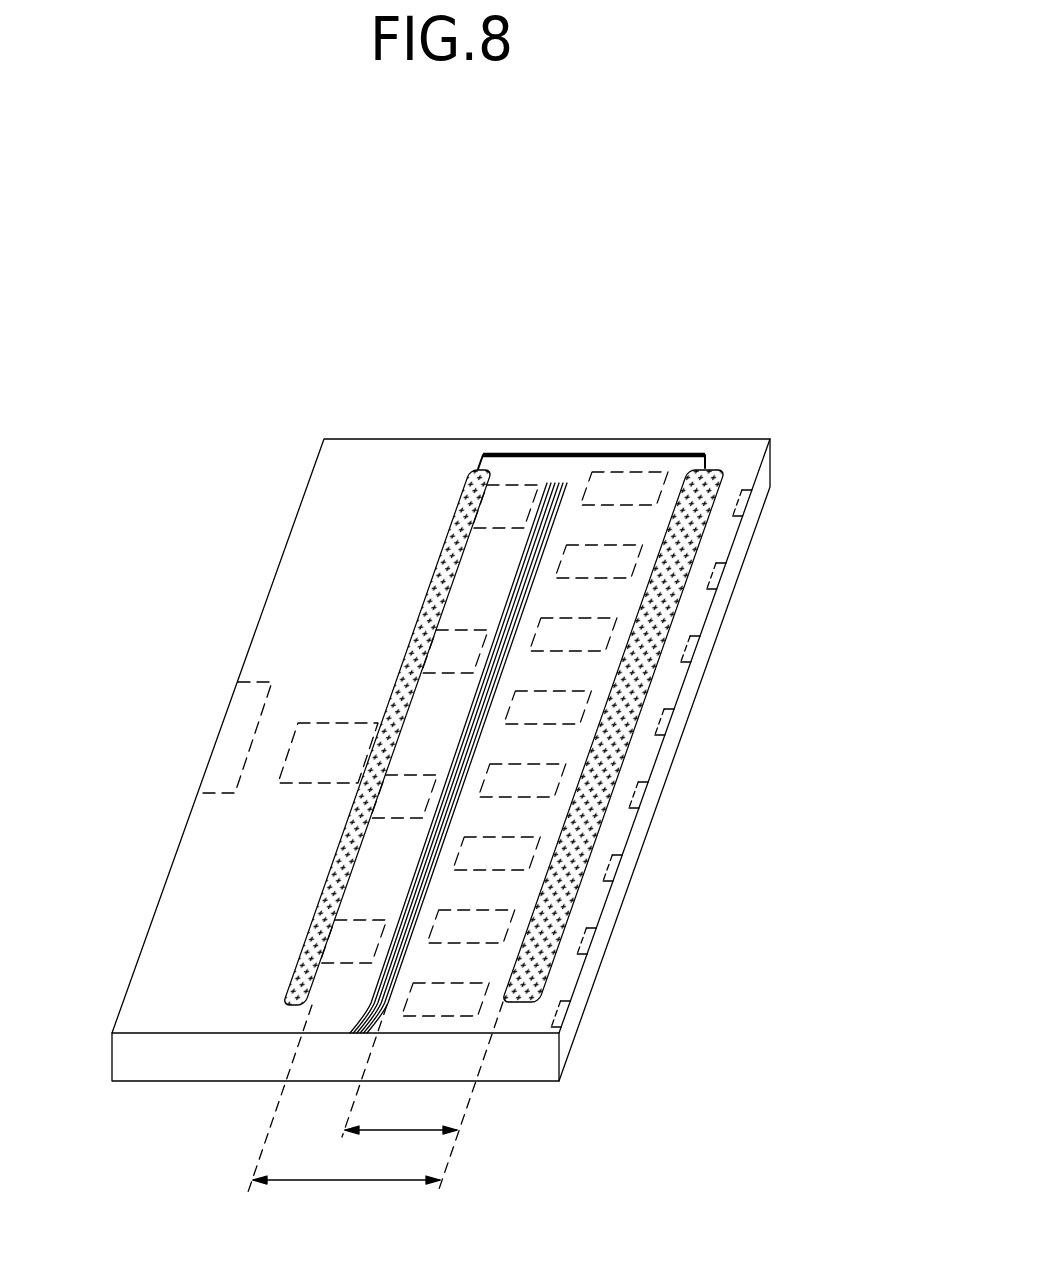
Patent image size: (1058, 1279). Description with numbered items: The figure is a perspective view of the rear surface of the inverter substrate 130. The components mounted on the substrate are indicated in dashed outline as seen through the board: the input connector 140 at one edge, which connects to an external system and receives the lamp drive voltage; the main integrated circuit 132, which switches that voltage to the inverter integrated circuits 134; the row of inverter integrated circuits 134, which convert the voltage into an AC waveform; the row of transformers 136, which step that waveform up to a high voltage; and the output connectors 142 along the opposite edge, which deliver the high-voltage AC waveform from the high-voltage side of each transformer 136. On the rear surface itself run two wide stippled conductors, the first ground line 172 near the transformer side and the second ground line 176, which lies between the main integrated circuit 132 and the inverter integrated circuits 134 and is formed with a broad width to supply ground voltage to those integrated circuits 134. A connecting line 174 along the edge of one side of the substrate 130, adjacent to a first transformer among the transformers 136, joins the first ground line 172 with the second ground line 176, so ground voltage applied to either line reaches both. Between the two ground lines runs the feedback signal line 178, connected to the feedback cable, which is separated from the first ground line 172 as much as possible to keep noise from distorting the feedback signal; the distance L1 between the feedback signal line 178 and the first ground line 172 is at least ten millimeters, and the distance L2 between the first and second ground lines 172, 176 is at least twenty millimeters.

The inverter substrate 130 is at (324, 438).
The main integrated circuit 132 is at (325, 723).
The inverter integrated circuit 134 is at (507, 500).
The transformer 136 is at (645, 480).
The input connector 140 is at (220, 740).
The output connector 142 is at (748, 500).
The first ground line 172 is at (712, 475).
The connecting line 174 is at (610, 452).
The second ground line 176 is at (457, 534).
The feedback signal line 178 is at (563, 483).
The distance between feedback signal line and first ground line L1 is at (422, 1097).
The distance between first and second ground lines L2 is at (344, 1098).